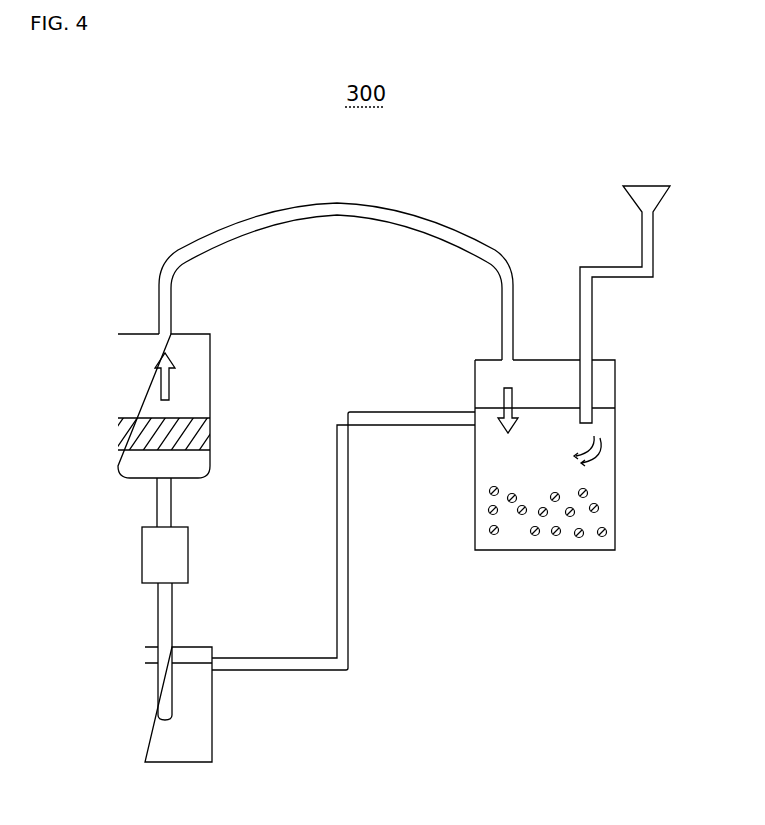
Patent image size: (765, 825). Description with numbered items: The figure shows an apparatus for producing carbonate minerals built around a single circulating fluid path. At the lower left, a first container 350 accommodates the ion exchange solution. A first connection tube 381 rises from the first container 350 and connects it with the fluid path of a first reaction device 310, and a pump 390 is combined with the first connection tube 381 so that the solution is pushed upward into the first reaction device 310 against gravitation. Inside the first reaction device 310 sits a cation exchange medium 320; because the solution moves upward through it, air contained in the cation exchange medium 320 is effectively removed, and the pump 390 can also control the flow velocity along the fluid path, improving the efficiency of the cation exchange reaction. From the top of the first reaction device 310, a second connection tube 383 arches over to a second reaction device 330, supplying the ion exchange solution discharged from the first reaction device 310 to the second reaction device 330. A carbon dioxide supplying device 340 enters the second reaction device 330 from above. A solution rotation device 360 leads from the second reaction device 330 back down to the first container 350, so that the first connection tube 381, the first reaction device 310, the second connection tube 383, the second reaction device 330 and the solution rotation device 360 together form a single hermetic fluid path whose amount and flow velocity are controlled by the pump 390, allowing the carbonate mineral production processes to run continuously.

The first reaction device 310 is at (118, 372).
The cation exchange medium 320 is at (118, 432).
The second reaction device 330 is at (615, 487).
The carbon dioxide supplying device 340 is at (653, 240).
The first container 350 is at (145, 716).
The solution rotation device 360 is at (350, 644).
The first connection tube 381 is at (171, 497).
The second connection tube 383 is at (340, 215).
The pump 390 is at (188, 553).